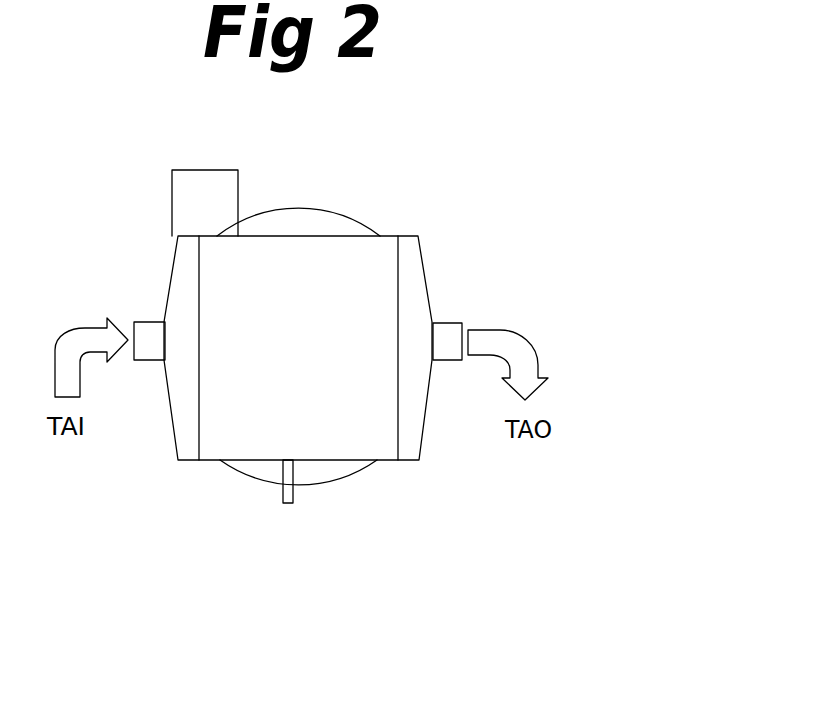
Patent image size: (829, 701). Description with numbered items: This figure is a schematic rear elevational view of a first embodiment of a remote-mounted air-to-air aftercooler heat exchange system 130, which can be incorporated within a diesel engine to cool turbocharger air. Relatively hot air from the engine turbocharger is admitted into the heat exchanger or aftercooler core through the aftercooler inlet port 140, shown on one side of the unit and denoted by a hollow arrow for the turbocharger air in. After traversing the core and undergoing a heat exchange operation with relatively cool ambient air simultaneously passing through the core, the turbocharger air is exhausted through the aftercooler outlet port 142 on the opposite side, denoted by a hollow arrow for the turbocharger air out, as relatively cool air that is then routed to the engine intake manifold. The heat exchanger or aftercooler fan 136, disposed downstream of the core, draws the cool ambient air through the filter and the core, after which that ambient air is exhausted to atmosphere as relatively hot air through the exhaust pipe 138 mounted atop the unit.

The remote-mounted air-to-air aftercooler heat exchange system 130 is at (452, 140).
The aftercooler fan 136 is at (307, 218).
The exhaust pipe 138 is at (183, 202).
The aftercooler inlet port 140 is at (152, 332).
The aftercooler outlet port 142 is at (445, 332).